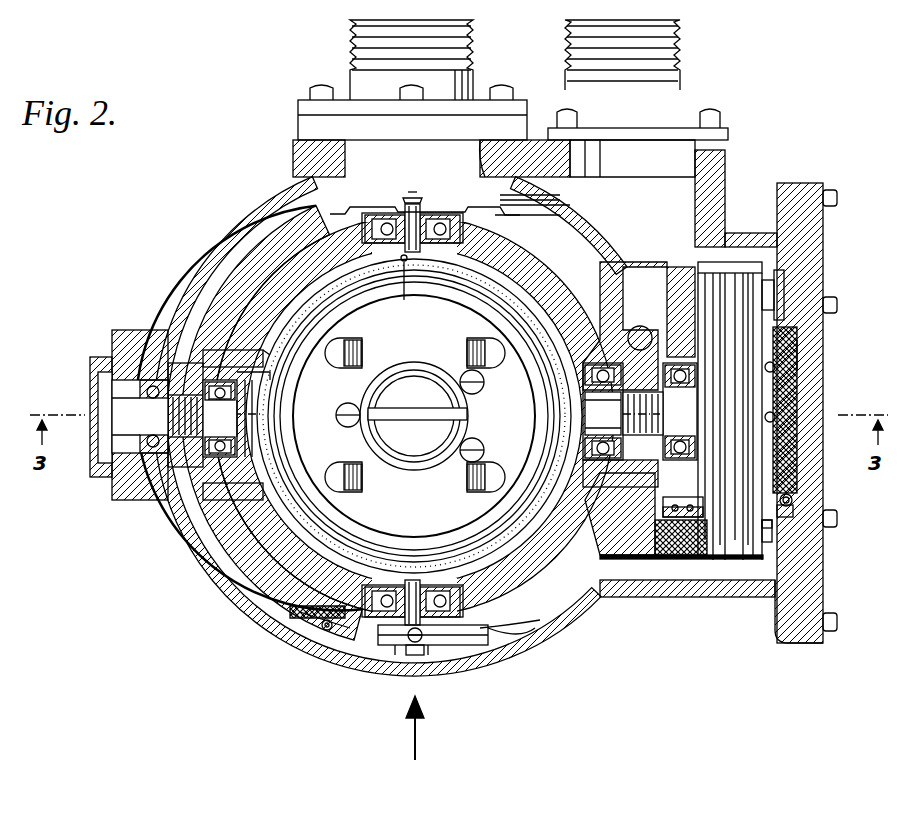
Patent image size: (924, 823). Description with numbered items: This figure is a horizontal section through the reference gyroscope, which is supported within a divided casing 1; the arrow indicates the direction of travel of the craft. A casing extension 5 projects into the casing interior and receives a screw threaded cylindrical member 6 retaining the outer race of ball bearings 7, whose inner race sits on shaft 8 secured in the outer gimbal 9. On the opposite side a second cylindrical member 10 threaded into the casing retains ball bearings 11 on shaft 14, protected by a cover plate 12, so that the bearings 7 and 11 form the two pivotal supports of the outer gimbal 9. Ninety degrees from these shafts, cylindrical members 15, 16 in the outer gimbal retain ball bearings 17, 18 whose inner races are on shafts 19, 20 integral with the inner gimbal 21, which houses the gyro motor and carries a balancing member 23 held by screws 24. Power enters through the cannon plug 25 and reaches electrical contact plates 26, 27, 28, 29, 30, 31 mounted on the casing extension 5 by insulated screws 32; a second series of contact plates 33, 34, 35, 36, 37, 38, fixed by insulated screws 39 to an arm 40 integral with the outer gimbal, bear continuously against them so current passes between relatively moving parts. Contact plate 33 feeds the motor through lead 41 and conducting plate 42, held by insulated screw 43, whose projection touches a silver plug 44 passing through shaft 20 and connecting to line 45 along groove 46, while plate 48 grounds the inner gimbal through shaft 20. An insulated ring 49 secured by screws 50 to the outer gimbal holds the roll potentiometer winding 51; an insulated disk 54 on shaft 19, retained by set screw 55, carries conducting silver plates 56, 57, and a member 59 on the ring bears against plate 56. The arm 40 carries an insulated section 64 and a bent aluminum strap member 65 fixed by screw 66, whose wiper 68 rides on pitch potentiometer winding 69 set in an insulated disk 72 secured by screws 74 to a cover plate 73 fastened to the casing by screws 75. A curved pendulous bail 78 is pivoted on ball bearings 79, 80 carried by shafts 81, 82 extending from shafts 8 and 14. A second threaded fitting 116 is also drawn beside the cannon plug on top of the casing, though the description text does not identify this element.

The divided casing 1 is at (205, 262).
The casing extension 5 is at (668, 278).
The screw threaded cylindrical member 6 is at (678, 360).
The ball bearings 7 is at (616, 411).
The shaft 8 is at (600, 445).
The outer gimbal 9 is at (592, 266).
The second cylindrical member 10 is at (120, 383).
The ball bearings 11 is at (140, 395).
The cover plate 12 is at (95, 360).
The shaft 14 is at (150, 420).
The cylindrical member 15 is at (380, 585).
The cylindrical member 16 is at (378, 242).
The ball bearings 17 is at (440, 585).
The ball bearings 18 is at (405, 234).
The shaft 19 is at (412, 581).
The shaft 20 is at (408, 244).
The inner gimbal 21 is at (308, 308).
The balancing member 23 is at (414, 416).
The screws 24 is at (348, 403).
The cannon plug 25 is at (684, 92).
The electrical contact plate 26 is at (703, 272).
The electrical contact plate 27 is at (713, 278).
The electrical contact plate 28 is at (745, 278).
The electrical contact plate 29 is at (748, 236).
The electrical contact plate 30 is at (762, 248).
The electrical contact plate 31 is at (790, 252).
The insulated screws 32 is at (770, 290).
The contact plate 33 is at (708, 558).
The contact plate 34 is at (718, 558).
The contact plate 35 is at (732, 558).
The contact plate 36 is at (746, 558).
The contact plate 37 is at (760, 560).
The contact plate 38 is at (770, 555).
The insulated screws 39 is at (774, 538).
The arm 40 is at (632, 578).
The lead 41 is at (512, 213).
The conducting plate 42 is at (492, 178).
The insulated screw 43 is at (505, 185).
The silver plug 44 is at (415, 196).
The line 45 is at (408, 268).
The groove 46 is at (410, 287).
The plate 48 is at (364, 208).
The insulated ring 49 is at (292, 620).
The screws 50 is at (322, 628).
The potentiometer winding 51 is at (322, 632).
The insulated disk 54 is at (408, 648).
The set screw 55 is at (423, 637).
The conducting silver plate 56 is at (500, 645).
The conducting silver plate 57 is at (392, 652).
The member 59 is at (416, 656).
The insulated section 64 is at (675, 560).
The bent aluminum strap member 65 is at (663, 508).
The screw 66 is at (676, 504).
The wiper 68 is at (800, 520).
The potentiometer winding 69 is at (795, 500).
The insulated disk 72 is at (790, 425).
The cover plate 73 is at (800, 352).
The screws 74 is at (776, 368).
The screws 75 is at (840, 306).
The curved pendulous bail 78 is at (240, 378).
The ball bearings 79 is at (586, 376).
The ball bearings 80 is at (238, 386).
The shaft 81 is at (604, 413).
The shaft 82 is at (228, 422).
The threaded conduit fitting 116 is at (360, 86).